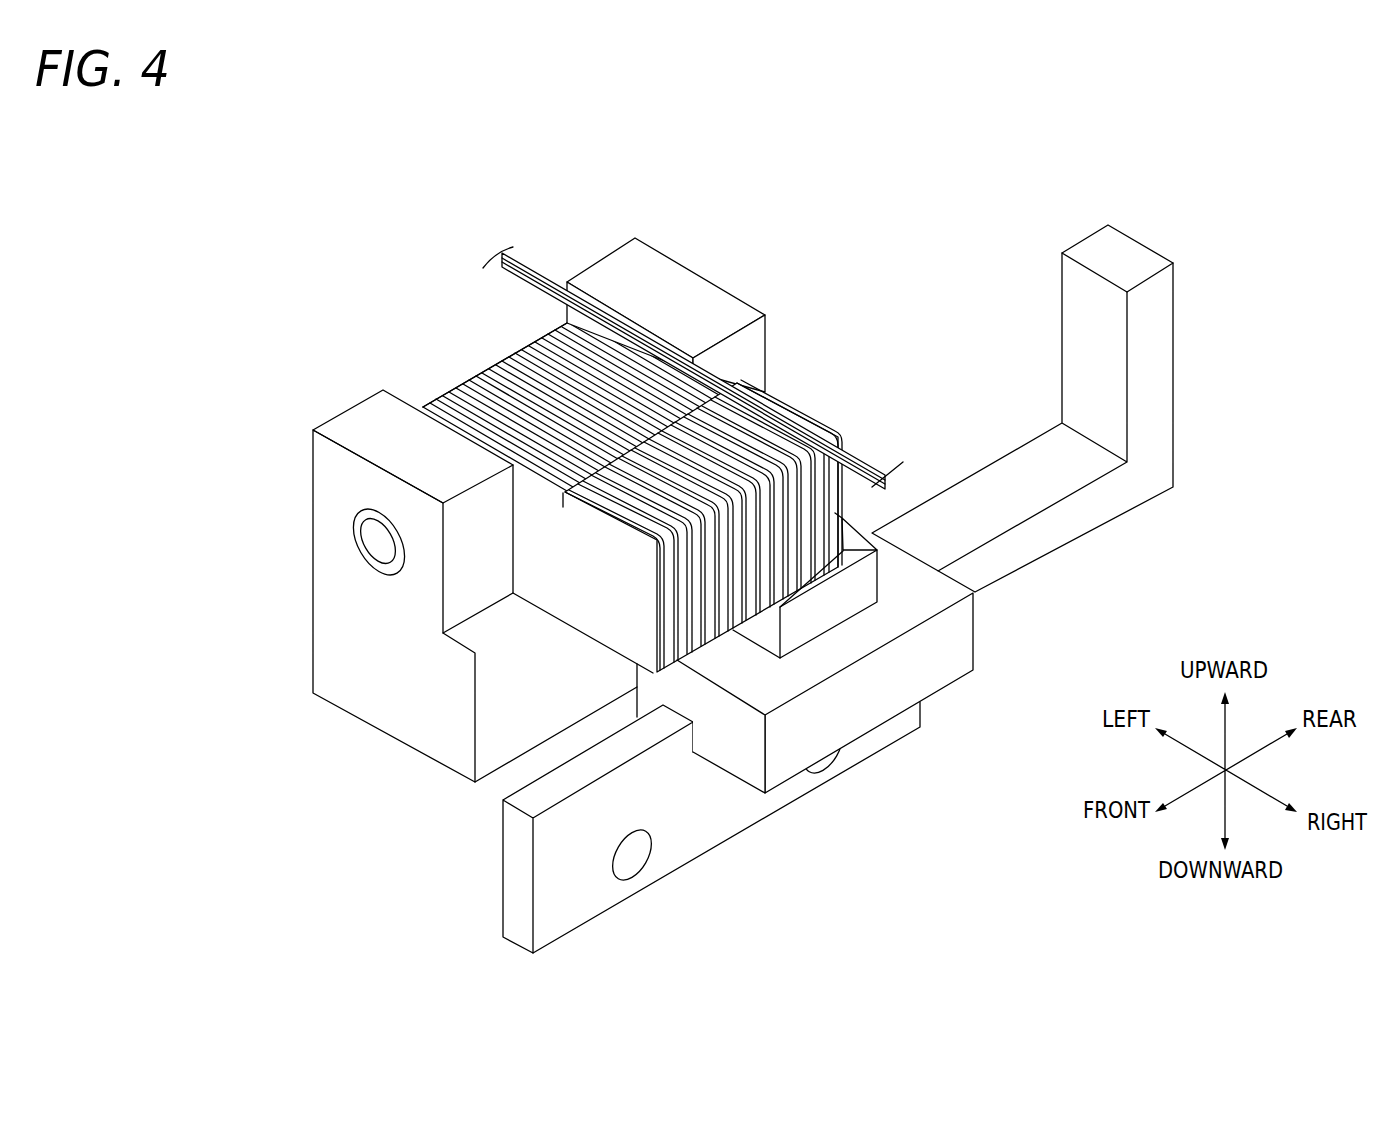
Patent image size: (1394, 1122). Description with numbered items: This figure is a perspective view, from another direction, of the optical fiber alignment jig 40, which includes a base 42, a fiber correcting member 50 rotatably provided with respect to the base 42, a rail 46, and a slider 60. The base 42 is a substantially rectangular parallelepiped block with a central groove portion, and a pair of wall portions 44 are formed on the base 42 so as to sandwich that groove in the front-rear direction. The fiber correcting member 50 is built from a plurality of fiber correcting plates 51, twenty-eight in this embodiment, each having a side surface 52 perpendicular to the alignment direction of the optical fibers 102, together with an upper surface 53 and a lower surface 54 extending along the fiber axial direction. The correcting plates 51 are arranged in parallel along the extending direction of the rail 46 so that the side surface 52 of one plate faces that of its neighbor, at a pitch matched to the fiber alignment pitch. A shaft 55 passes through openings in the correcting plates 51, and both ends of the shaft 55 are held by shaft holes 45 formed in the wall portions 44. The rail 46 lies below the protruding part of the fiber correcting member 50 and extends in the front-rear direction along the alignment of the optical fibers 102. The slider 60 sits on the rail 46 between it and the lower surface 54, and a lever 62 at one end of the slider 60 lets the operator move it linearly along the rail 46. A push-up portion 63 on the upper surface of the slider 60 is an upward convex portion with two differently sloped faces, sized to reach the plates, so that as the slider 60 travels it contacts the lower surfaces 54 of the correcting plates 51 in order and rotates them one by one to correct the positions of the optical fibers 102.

The optical fiber alignment jig 40 is at (393, 226).
The base 42 is at (297, 598).
The wall portions 44 is at (357, 417).
The shaft holes 45 is at (360, 528).
The rail 46 is at (713, 840).
The fiber correcting member 50 is at (499, 342).
The fiber correcting plates 51 is at (483, 377).
The side surface 52 is at (587, 610).
The upper surface 53 is at (547, 487).
The lower surface 54 is at (615, 655).
The shaft 55 is at (373, 547).
The slider 60 is at (938, 672).
The lever 62 is at (1155, 345).
The push-up portion 63 is at (850, 582).
The optical fibers 102 is at (537, 267).